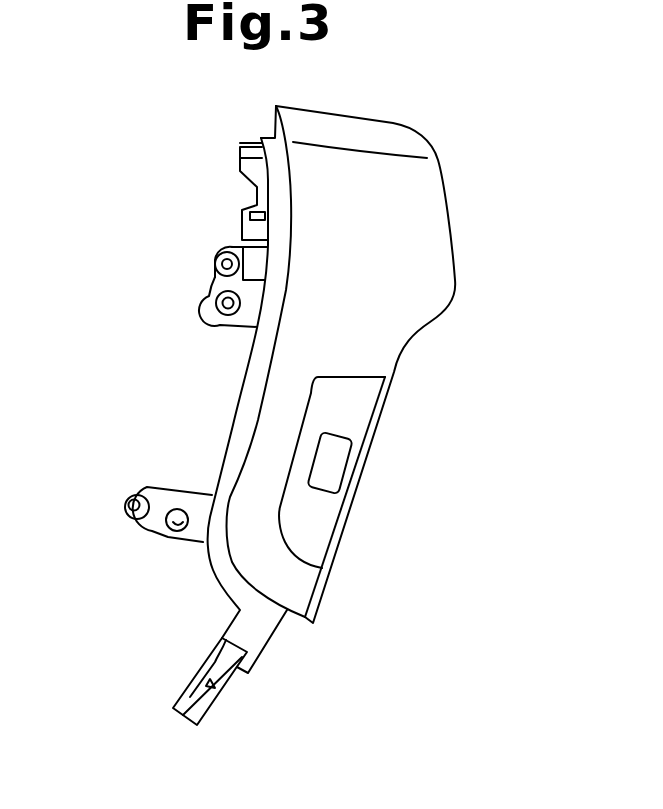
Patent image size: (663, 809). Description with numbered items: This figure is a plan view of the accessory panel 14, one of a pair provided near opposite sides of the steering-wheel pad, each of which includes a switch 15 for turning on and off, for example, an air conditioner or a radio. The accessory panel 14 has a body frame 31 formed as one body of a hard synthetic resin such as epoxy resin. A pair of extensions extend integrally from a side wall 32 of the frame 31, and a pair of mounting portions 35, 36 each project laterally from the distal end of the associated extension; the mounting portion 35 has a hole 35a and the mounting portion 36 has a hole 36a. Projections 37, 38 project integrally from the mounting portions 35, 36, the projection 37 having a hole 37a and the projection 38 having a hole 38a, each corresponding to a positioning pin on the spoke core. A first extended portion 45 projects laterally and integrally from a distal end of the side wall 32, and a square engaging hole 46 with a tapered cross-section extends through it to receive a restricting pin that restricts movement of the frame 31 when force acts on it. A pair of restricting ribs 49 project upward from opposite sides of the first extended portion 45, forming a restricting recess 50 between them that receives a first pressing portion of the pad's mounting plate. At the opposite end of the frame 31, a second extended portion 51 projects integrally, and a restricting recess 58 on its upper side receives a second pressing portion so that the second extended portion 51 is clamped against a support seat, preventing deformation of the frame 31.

The accessory panel 14 is at (452, 205).
The switch 15 is at (333, 463).
The body frame 31 is at (380, 255).
The side wall 32 is at (237, 412).
The mounting portion 35 is at (212, 322).
The hole 35a is at (228, 310).
The mounting portion 36 is at (200, 500).
The hole 36a is at (180, 528).
The projection 37 is at (215, 262).
The hole 37a is at (222, 270).
The projection 38 is at (147, 487).
The hole 38a is at (130, 508).
The first extended portion 45 is at (250, 180).
The engaging hole 46 is at (250, 213).
The restricting ribs 49 is at (250, 147).
The restricting recess 50 is at (240, 157).
The second extended portion 51 is at (195, 693).
The restricting recess 58 is at (212, 685).